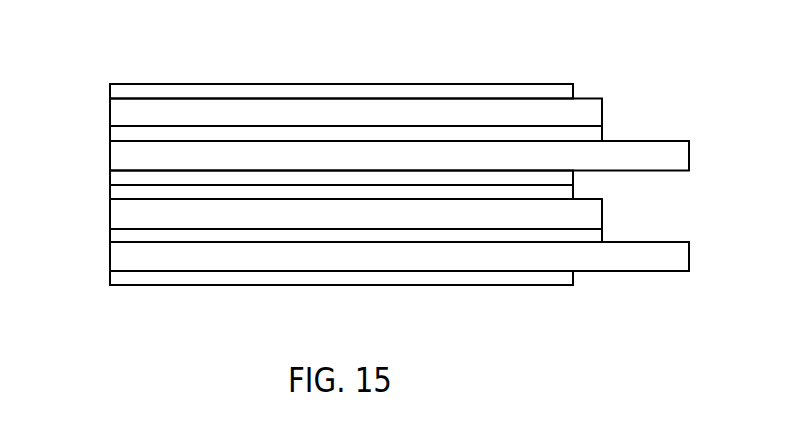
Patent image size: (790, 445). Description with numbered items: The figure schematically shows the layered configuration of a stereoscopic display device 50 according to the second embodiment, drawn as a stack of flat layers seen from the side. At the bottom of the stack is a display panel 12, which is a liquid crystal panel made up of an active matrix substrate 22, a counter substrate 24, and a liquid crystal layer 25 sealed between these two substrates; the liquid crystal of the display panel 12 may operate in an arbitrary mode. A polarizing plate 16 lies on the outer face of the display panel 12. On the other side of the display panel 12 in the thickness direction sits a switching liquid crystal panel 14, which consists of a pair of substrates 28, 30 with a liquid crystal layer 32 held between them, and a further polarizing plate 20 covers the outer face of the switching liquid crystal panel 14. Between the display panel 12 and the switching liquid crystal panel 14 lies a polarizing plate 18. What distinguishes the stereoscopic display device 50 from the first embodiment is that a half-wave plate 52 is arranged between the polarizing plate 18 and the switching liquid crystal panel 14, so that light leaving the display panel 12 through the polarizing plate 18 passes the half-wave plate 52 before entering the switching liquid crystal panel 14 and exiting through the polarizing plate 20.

The stereoscopic display device 50 is at (609, 88).
The polarizing plate 20 is at (423, 95).
The switching liquid crystal panel 14 is at (69, 92).
The substrate 30 is at (127, 111).
The liquid crystal layer 32 is at (127, 134).
The substrate 28 is at (127, 156).
The λ/2 plate 52 is at (562, 178).
The polarizing plate 18 is at (562, 193).
The display panel 12 is at (68, 197).
The counter substrate 24 is at (127, 211).
The liquid crystal layer 25 is at (127, 236).
The active matrix substrate 22 is at (127, 257).
The polarizing plate 16 is at (438, 277).